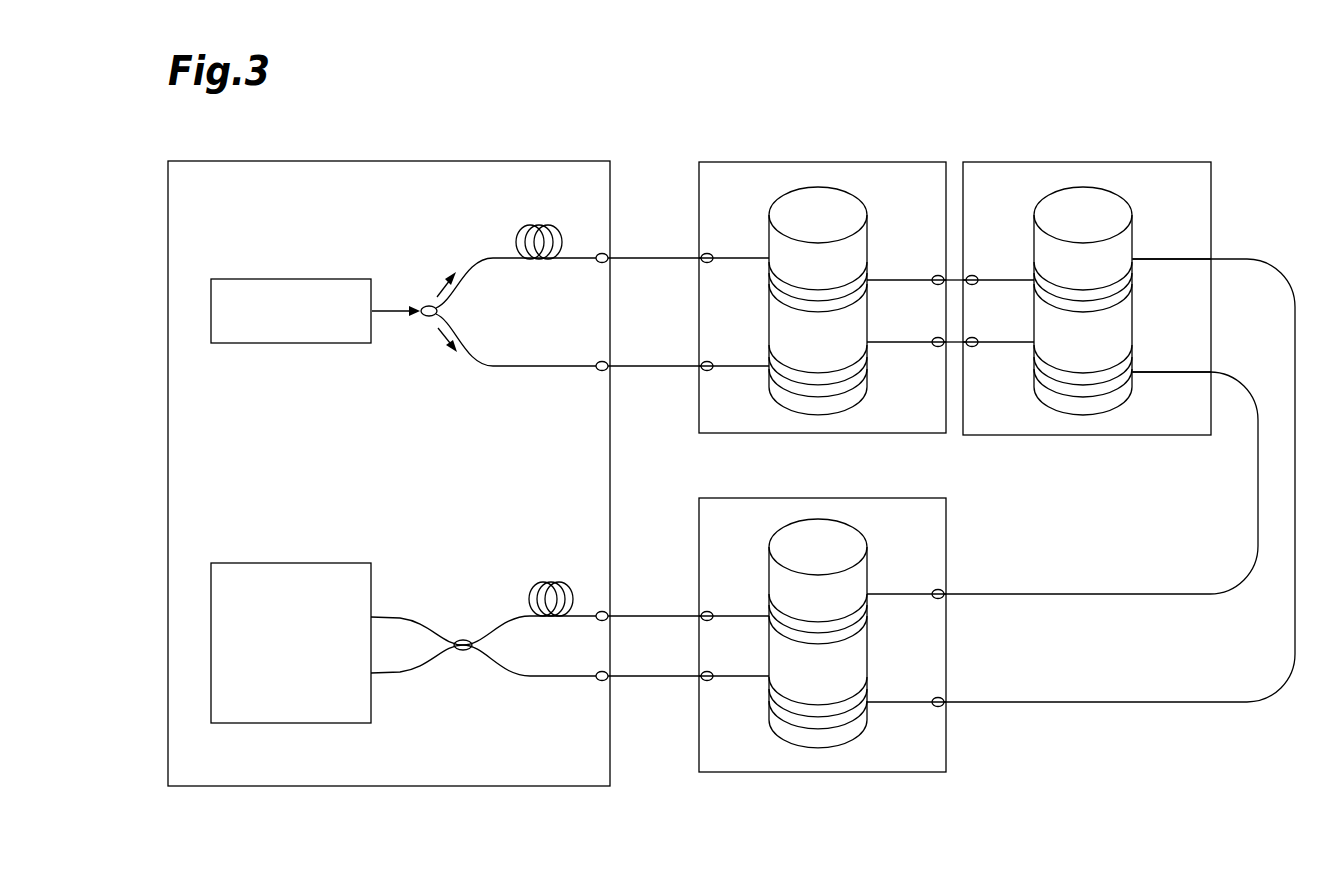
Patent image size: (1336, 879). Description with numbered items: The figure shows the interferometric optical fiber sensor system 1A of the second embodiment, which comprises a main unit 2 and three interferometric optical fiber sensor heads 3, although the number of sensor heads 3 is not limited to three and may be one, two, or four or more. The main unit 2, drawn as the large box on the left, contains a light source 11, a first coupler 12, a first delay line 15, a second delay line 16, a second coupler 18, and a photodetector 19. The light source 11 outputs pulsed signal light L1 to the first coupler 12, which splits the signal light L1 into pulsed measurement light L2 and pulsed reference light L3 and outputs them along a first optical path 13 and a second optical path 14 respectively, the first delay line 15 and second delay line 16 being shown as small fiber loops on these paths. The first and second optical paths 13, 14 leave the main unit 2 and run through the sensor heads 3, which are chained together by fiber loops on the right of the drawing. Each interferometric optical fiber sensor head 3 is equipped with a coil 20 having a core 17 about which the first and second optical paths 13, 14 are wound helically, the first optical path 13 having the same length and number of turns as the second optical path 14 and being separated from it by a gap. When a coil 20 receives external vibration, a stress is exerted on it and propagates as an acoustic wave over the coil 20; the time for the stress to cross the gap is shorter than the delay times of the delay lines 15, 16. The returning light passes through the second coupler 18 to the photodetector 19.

The interferometric optical fiber sensor system 1A is at (1075, 118).
The main unit 2 is at (548, 160).
The interferometric optical fiber sensor head 3 is at (880, 161).
The light source 11 is at (297, 278).
The first coupler 12 is at (425, 322).
The first optical path 13 is at (494, 257).
The second optical path 14 is at (500, 368).
The first delay line 15 is at (538, 225).
The second delay line 16 is at (552, 583).
The core 17 is at (833, 207).
The second coupler 18 is at (465, 640).
The photodetector 19 is at (293, 562).
The coil 20 is at (880, 235).
The signal light L1 is at (396, 299).
The measurement light L2 is at (440, 291).
The reference light L3 is at (437, 335).